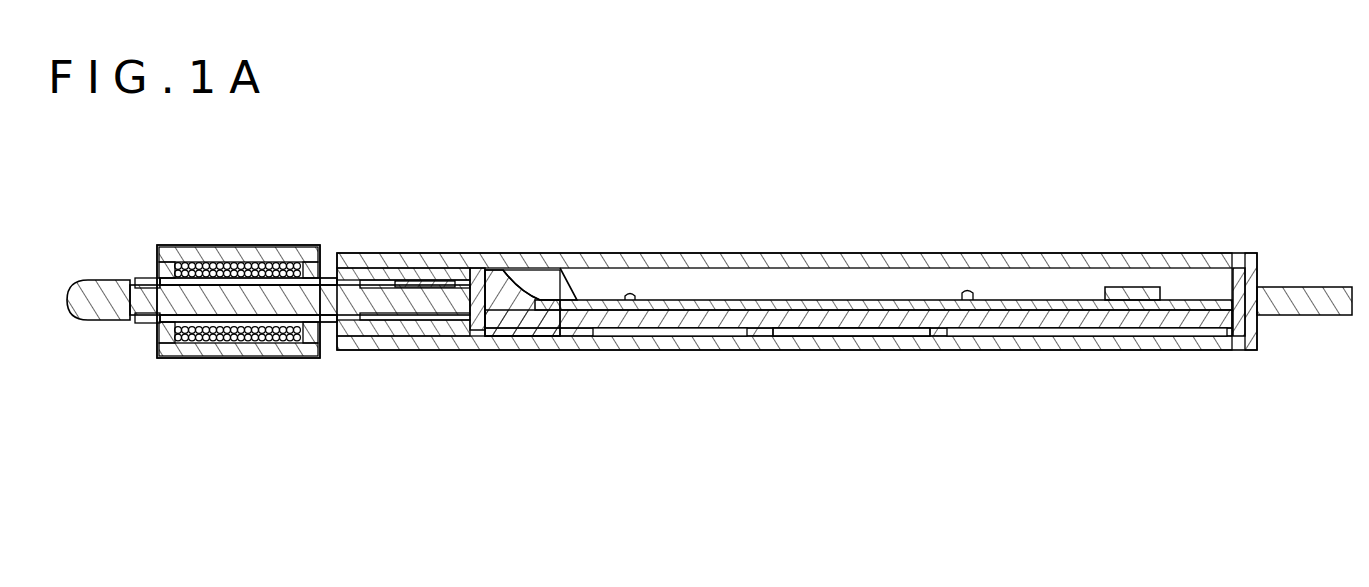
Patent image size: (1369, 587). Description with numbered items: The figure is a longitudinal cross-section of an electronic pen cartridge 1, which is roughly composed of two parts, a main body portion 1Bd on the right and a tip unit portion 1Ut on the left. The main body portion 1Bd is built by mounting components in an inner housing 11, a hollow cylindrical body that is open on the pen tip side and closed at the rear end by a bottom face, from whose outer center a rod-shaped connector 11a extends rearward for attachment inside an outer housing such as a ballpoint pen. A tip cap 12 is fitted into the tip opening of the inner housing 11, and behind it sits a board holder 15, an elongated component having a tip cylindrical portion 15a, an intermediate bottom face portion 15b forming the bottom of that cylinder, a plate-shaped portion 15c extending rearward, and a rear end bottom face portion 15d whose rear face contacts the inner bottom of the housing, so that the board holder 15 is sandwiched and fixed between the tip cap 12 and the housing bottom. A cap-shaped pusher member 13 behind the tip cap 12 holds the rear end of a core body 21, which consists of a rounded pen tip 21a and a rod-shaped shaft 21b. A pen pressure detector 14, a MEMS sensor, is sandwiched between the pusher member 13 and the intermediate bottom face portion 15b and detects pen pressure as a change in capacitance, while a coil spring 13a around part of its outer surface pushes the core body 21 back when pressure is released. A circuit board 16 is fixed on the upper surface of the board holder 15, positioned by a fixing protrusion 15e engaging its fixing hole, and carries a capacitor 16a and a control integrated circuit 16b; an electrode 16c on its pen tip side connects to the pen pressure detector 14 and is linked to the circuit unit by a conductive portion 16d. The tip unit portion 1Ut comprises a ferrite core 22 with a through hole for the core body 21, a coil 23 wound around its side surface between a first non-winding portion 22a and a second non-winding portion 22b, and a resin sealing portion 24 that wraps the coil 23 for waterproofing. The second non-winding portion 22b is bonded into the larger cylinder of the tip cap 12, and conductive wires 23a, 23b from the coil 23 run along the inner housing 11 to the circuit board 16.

The electronic pen cartridge 1 is at (631, 185).
The inner housing 11 is at (676, 255).
The rod-shaped connector 11a is at (1288, 287).
The tip cap 12 is at (352, 268).
The pusher member 13 is at (443, 272).
The coil spring 13a is at (410, 272).
The pen pressure detector 14 is at (471, 332).
The board holder 15 is at (607, 330).
The tip cylindrical portion 15a is at (417, 337).
The intermediate bottom face portion 15b is at (499, 332).
The plate-shaped portion 15c is at (854, 336).
The rear end bottom face portion 15d is at (1238, 300).
The fixing protrusion 15e is at (633, 300).
The circuit board 16 is at (733, 312).
The capacitor 16a is at (966, 290).
The control integrated circuit 16b is at (1122, 287).
The electrode 16c is at (486, 275).
The conductive portion 16d is at (525, 268).
The core body 21 is at (225, 410).
The pen tip 21a is at (96, 320).
The shaft 21b is at (181, 323).
The ferrite core 22 is at (247, 340).
The first non-winding portion 22a is at (150, 278).
The second non-winding portion 22b is at (323, 333).
The coil 23 is at (265, 262).
The conductive wire 23a is at (324, 278).
The conductive wire 23b is at (248, 318).
The sealing portion 24 is at (203, 245).
The tip unit portion 1Ut is at (286, 408).
The main body portion 1Bd is at (806, 393).